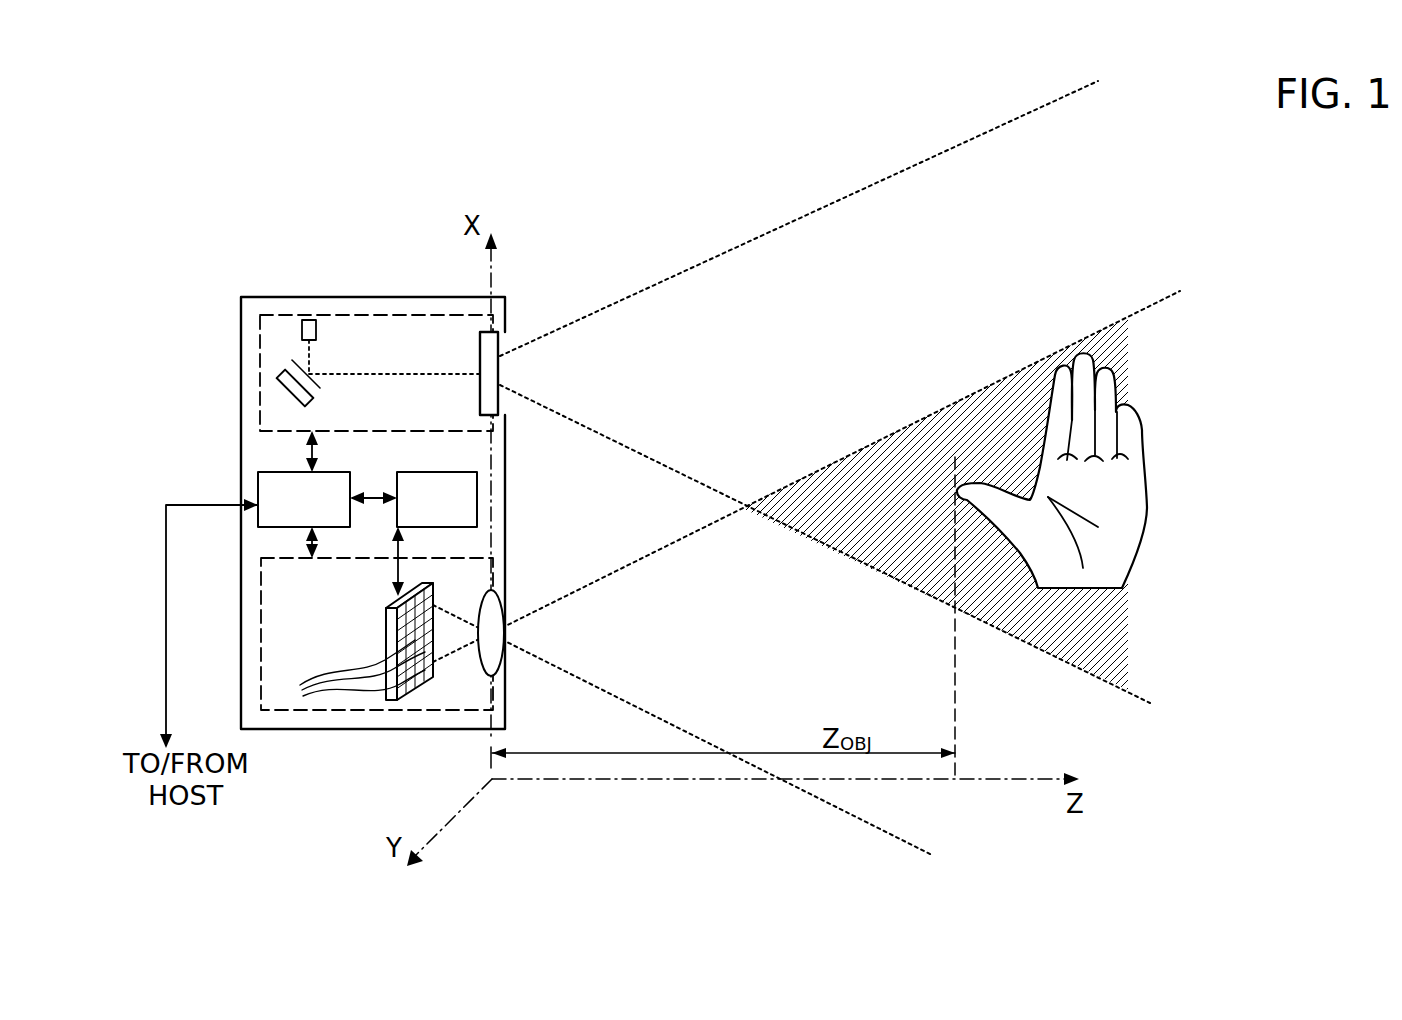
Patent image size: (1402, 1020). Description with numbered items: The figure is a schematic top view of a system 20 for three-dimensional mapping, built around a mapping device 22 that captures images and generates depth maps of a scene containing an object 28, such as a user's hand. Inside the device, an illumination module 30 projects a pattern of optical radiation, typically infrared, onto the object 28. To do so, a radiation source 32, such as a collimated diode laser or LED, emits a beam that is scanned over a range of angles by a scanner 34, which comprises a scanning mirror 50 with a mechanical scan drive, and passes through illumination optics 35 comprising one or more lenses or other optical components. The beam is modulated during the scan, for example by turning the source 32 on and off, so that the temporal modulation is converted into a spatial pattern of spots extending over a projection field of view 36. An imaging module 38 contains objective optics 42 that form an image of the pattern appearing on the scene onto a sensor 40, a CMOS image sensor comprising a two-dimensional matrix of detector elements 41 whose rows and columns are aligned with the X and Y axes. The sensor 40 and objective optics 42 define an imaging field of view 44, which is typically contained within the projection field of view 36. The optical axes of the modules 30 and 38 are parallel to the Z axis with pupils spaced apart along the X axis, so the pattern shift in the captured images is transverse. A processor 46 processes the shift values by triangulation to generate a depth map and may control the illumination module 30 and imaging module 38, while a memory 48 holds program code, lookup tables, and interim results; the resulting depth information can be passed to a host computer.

The system for 3D mapping 20 is at (226, 201).
The mapping device 22 is at (365, 297).
The object 28 is at (1142, 418).
The illumination module 30 is at (261, 352).
The radiation source 32 is at (309, 320).
The scanner 34 is at (279, 393).
The illumination optics 35 is at (500, 378).
The projection field of view 36 is at (800, 218).
The imaging module 38 is at (261, 600).
The sensor 40 is at (386, 610).
The detector elements 41 is at (349, 675).
The objective optics 42 is at (504, 616).
The imaging field of view 44 is at (657, 550).
The processor 46 is at (258, 490).
The memory 48 is at (477, 490).
The scanning mirror 50 is at (320, 383).